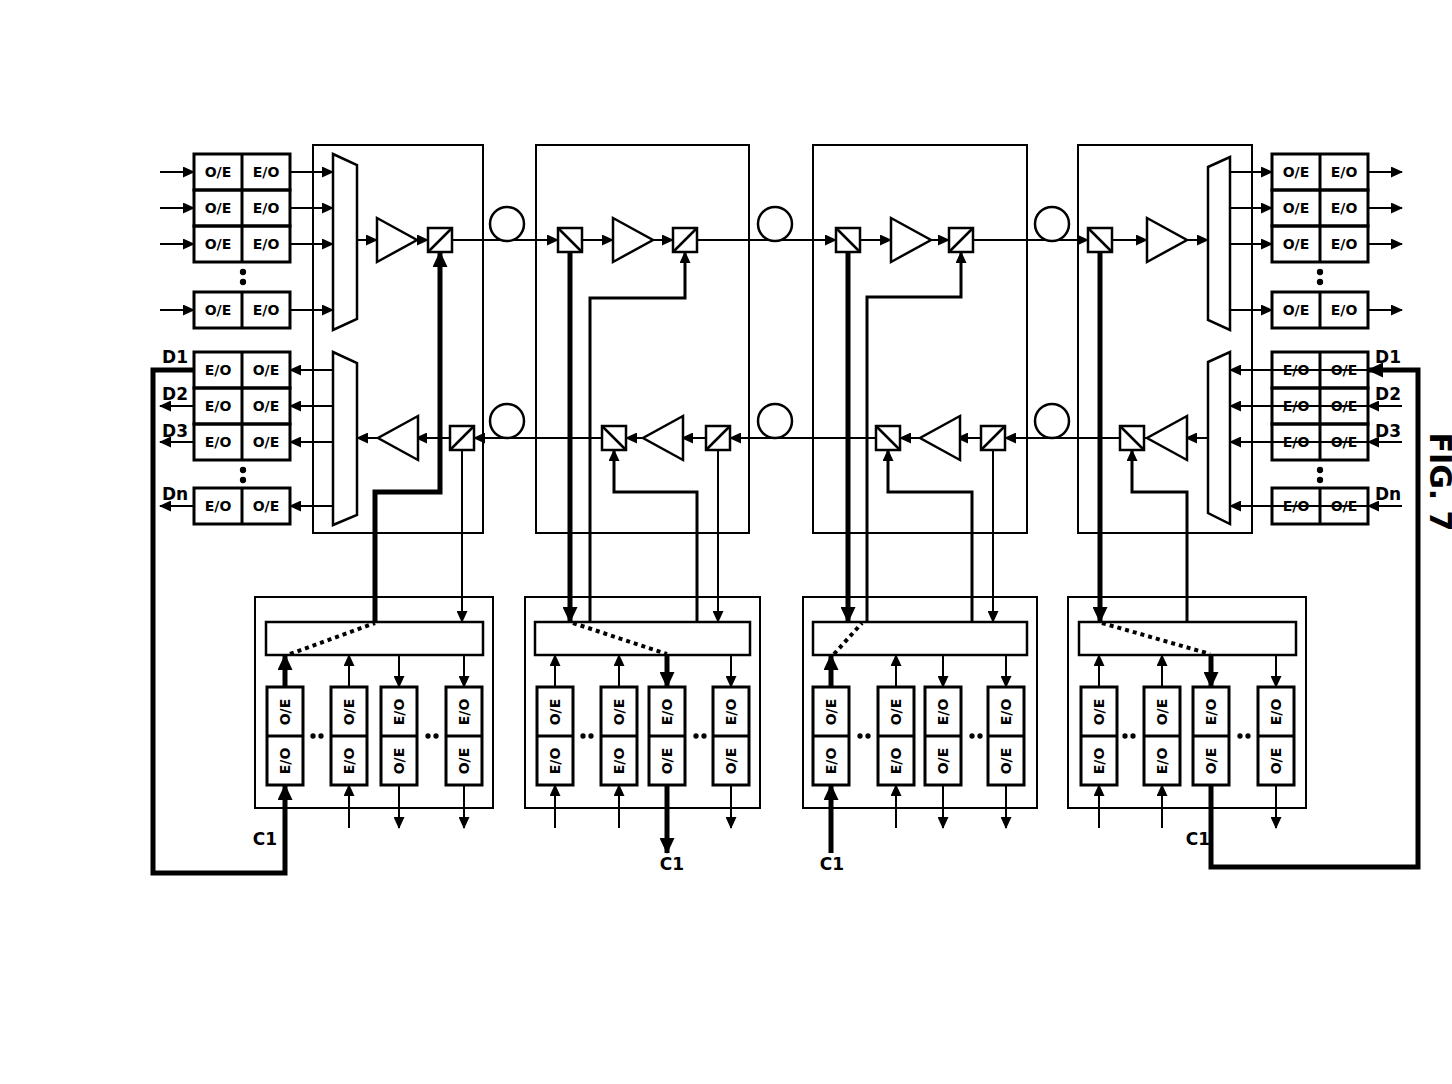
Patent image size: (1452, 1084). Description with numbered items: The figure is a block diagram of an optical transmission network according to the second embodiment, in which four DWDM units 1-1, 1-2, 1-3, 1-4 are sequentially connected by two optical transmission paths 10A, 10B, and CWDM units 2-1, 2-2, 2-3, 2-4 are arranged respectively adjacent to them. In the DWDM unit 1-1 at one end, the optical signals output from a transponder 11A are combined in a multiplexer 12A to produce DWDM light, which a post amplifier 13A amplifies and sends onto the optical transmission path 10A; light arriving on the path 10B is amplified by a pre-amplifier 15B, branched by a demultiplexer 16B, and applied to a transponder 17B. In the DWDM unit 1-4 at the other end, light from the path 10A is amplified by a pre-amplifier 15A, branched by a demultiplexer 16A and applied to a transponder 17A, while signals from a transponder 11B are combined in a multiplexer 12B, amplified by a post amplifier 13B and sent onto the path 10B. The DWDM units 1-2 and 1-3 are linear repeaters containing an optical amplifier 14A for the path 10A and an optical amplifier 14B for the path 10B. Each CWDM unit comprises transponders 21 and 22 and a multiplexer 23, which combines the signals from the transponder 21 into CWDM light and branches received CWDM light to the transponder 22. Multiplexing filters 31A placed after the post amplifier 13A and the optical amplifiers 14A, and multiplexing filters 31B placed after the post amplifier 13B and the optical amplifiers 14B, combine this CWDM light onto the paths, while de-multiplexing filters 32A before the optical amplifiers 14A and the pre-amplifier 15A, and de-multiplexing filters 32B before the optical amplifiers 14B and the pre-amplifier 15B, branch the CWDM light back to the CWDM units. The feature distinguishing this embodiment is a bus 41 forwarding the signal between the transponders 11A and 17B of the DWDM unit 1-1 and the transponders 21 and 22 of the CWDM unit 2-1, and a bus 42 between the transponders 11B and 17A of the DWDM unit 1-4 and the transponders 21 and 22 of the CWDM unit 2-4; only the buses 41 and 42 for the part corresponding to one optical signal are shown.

The DWDM unit 1-1 is at (440, 145).
The DWDM unit 1-2 is at (702, 145).
The DWDM unit 1-3 is at (979, 145).
The DWDM unit 1-4 is at (1212, 145).
The CWDM unit 2-1 is at (480, 597).
The CWDM unit 2-2 is at (745, 597).
The CWDM unit 2-3 is at (1020, 597).
The CWDM unit 2-4 is at (1271, 597).
The optical transmission path 10A is at (508, 244).
The optical transmission path 10B is at (511, 441).
The transponder 11A is at (240, 142).
The transponder 11B is at (1325, 542).
The multiplexer 12A is at (363, 176).
The multiplexer 12B is at (1205, 378).
The post amplifier 13A is at (398, 224).
The post amplifier 13B is at (1158, 418).
The optical amplifier 14A is at (628, 224).
The optical amplifier 14B is at (656, 418).
The pre-amplifier 15A is at (1163, 224).
The pre-amplifier 15B is at (398, 418).
The demultiplexer 16A is at (1205, 186).
The demultiplexer 16B is at (368, 374).
The transponder 17A is at (1320, 142).
The transponder 17B is at (236, 556).
The transponder 21 is at (257, 712).
The transponder 22 is at (485, 745).
The multiplexer 23 is at (328, 622).
The multiplexing filter 31A is at (444, 228).
The multiplexing filter 31B is at (609, 426).
The de-multiplexing filter 32A is at (572, 228).
The de-multiplexing filter 32B is at (461, 426).
The bus 41 is at (174, 791).
The bus 42 is at (1402, 773).